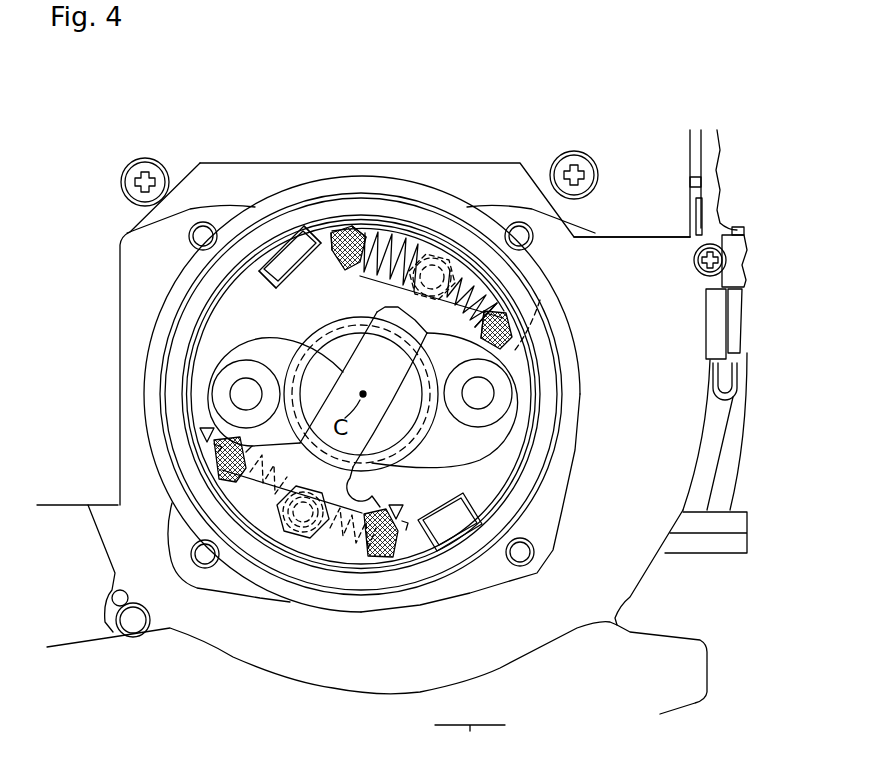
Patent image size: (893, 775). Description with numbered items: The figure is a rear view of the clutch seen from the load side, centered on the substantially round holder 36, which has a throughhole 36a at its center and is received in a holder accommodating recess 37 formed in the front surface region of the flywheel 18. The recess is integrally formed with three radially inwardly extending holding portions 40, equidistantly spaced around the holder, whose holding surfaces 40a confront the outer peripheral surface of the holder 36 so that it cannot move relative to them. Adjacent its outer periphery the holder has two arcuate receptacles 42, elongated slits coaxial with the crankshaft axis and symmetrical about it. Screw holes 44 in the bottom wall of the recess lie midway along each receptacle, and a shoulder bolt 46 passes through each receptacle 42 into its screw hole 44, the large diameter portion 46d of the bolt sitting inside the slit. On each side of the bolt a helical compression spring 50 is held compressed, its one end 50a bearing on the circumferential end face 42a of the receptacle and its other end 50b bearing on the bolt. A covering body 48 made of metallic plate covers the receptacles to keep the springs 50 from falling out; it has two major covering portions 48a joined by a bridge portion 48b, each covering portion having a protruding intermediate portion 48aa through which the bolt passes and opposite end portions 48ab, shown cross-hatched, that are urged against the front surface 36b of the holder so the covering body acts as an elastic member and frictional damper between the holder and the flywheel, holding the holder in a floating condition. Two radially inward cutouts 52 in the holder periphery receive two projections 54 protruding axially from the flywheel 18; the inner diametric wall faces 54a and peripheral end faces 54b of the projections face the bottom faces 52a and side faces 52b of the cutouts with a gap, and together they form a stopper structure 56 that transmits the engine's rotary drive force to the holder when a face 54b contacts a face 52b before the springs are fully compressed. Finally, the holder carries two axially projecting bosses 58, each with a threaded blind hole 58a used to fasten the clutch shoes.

The flywheel 18 is at (550, 370).
The holder 36 is at (213, 343).
The throughhole 36a is at (222, 278).
The front surface 36b is at (206, 360).
The holder accommodating recess 37 is at (172, 463).
The holding portions 40 is at (393, 197).
The holding surfaces 40a is at (393, 226).
The arcuate receptacles 42 is at (574, 175).
The circumferential end face 42a is at (525, 315).
The screw holes 44 is at (410, 282).
The shoulder bolt 46 is at (452, 262).
The large diameter portion 46d is at (466, 250).
The covering body 48 is at (500, 455).
The major covering portions 48a is at (440, 232).
The intermediate portion 48aa is at (237, 480).
The opposite end portions 48ab is at (375, 560).
The bridge portion 48b is at (392, 405).
The helical compression springs 50 is at (412, 232).
The one end of spring 50a is at (540, 245).
The other end of spring 50b is at (486, 238).
The cutouts 52 is at (490, 701).
The bottom faces 52a is at (363, 230).
The side faces 52b is at (310, 240).
The projections 54 is at (451, 701).
The inner diametric wall faces 54a is at (262, 282).
The peripheral end faces 54b is at (277, 257).
The stopper structure 56 is at (470, 740).
The bosses 58 is at (215, 396).
The threaded blind hole 58a is at (238, 388).